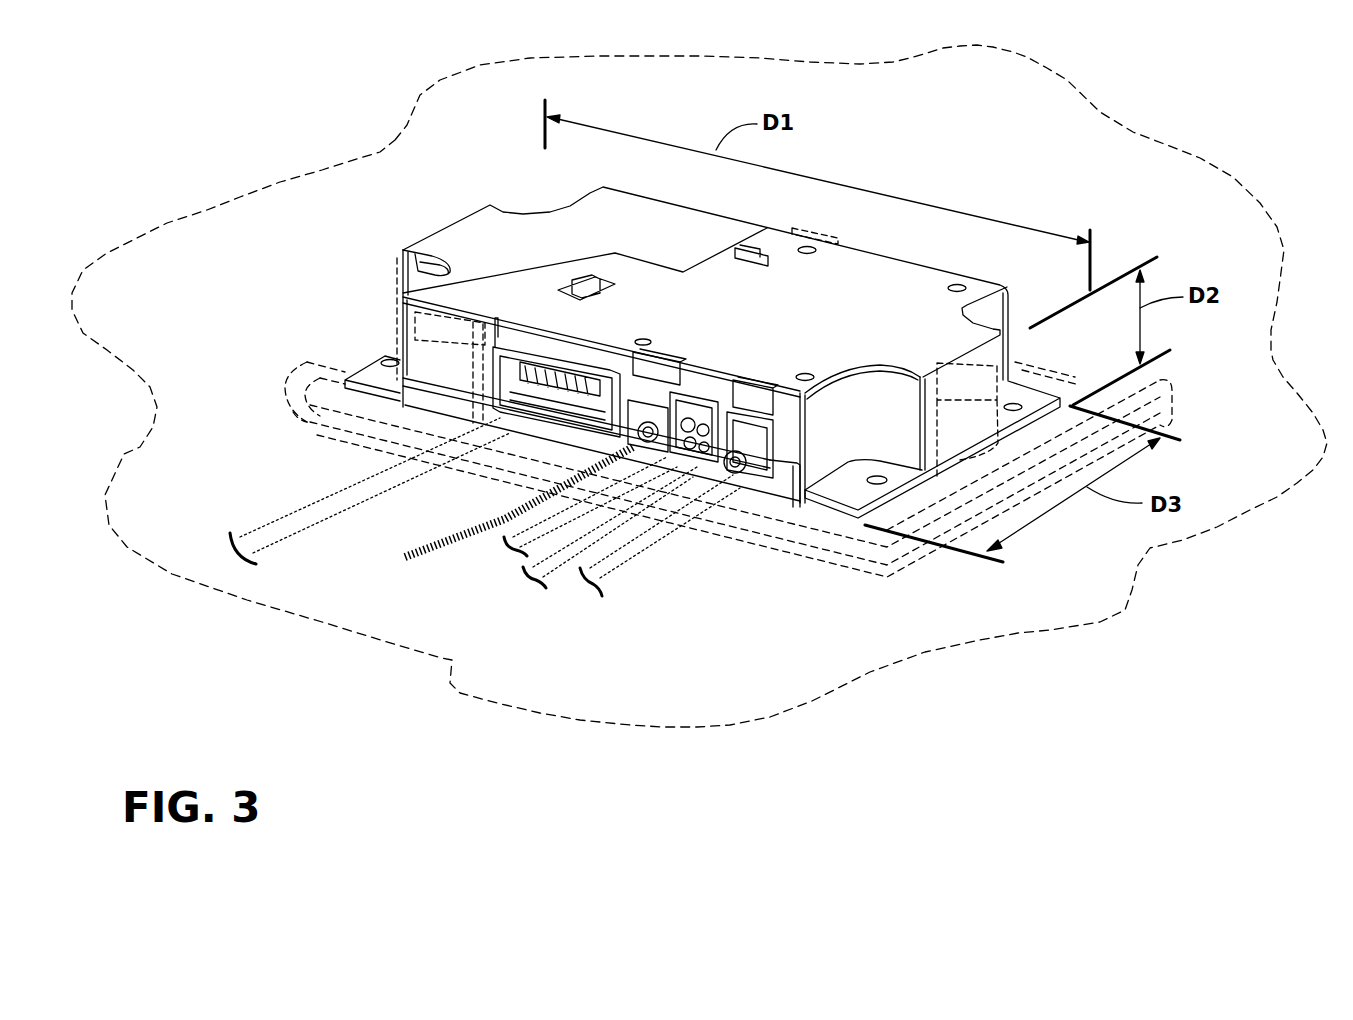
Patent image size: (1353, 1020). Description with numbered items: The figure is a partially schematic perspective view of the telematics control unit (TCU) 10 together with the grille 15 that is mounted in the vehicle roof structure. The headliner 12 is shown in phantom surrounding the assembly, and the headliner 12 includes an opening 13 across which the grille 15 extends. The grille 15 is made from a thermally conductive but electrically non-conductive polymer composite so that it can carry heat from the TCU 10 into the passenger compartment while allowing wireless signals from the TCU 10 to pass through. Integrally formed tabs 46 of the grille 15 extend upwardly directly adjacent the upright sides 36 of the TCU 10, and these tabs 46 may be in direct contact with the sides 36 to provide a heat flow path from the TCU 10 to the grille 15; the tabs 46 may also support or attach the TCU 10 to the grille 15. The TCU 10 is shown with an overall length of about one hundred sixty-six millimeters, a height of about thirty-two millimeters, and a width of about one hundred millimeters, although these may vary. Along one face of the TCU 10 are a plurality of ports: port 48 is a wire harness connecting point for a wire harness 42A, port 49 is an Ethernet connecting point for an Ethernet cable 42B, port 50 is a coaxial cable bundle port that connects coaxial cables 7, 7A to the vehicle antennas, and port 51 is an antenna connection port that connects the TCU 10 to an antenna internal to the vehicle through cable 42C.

The telematics control unit 10 is at (950, 264).
The headliner 12 is at (1097, 630).
The opening 13 is at (1113, 402).
The grille 15 is at (288, 370).
The sides of TCU 36 is at (787, 442).
The tabs 46 is at (830, 237).
The port 48 is at (567, 410).
The port 49 is at (640, 437).
The port 50 is at (697, 463).
The port 51 is at (723, 473).
The wire harness 42A is at (297, 510).
The Ethernet cable 42B is at (430, 538).
The cable 42C is at (614, 581).
The coaxial cable 7 is at (510, 555).
The coaxial cable 7A is at (532, 577).